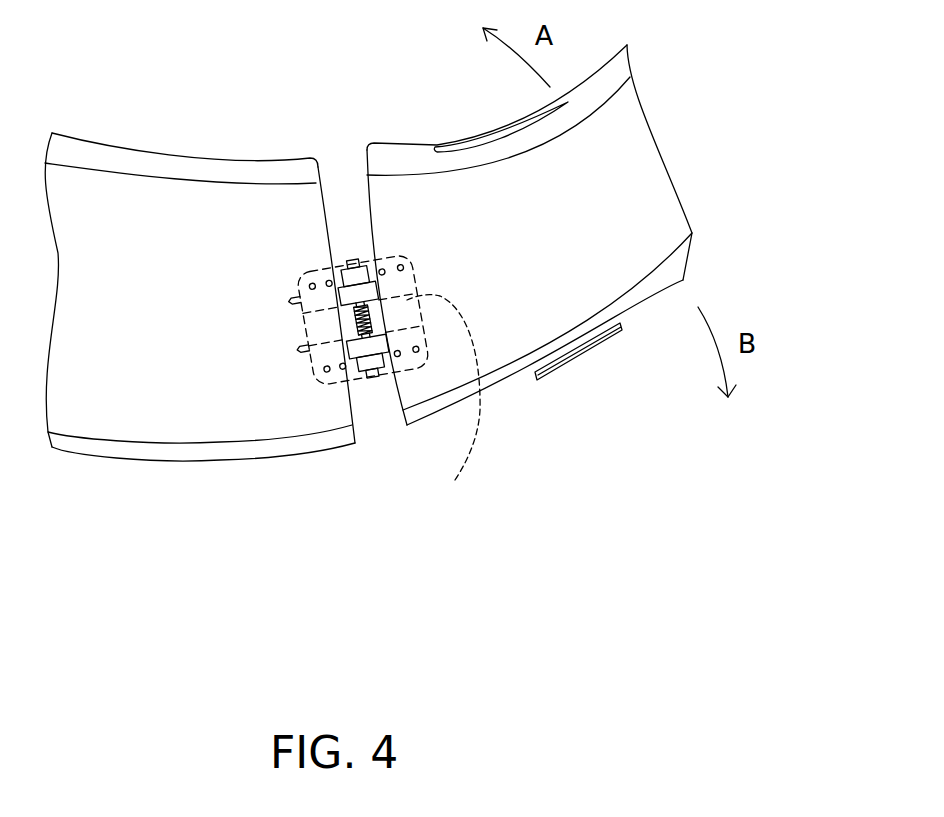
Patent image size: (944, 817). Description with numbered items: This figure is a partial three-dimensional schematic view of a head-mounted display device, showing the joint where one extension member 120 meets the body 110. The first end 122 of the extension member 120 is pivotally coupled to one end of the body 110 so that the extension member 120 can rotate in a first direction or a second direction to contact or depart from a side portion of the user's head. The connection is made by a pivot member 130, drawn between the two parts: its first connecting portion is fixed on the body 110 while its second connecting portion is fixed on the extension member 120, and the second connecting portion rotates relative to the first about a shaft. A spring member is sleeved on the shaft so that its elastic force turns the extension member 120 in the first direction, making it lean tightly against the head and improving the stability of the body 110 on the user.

The body 110 is at (149, 400).
The extension member 120 is at (630, 268).
The first end 122 is at (370, 208).
The pivot member 130 is at (371, 409).